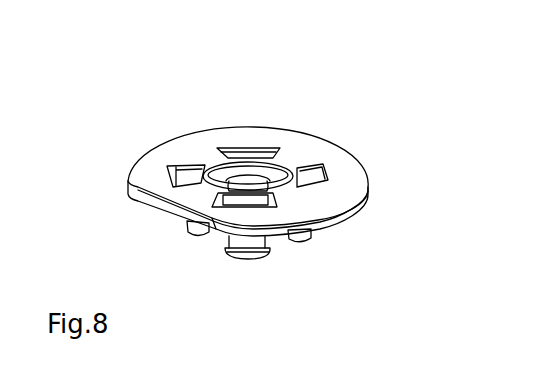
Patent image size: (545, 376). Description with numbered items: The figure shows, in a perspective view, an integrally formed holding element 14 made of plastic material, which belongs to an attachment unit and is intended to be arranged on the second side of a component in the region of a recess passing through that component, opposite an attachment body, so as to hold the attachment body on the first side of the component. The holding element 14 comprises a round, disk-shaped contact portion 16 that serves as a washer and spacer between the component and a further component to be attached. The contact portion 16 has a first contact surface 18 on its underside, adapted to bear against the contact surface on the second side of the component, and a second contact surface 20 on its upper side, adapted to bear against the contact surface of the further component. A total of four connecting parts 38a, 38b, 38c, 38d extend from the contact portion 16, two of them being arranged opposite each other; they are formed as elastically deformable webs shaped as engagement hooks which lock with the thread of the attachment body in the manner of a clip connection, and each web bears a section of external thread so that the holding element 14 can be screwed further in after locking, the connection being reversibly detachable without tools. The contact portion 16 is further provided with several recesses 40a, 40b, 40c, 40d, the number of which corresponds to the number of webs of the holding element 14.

The holding element 14 is at (410, 97).
The contact portion 16 is at (337, 195).
The first contact surface 18 is at (348, 238).
The second contact surface 20 is at (203, 142).
The connecting part 38a is at (203, 231).
The connecting part 38b is at (251, 246).
The connecting part 38c is at (292, 239).
The connecting part 38d is at (248, 183).
The recess 40a is at (185, 182).
The recess 40b is at (220, 195).
The recess 40c is at (328, 178).
The recess 40d is at (265, 154).